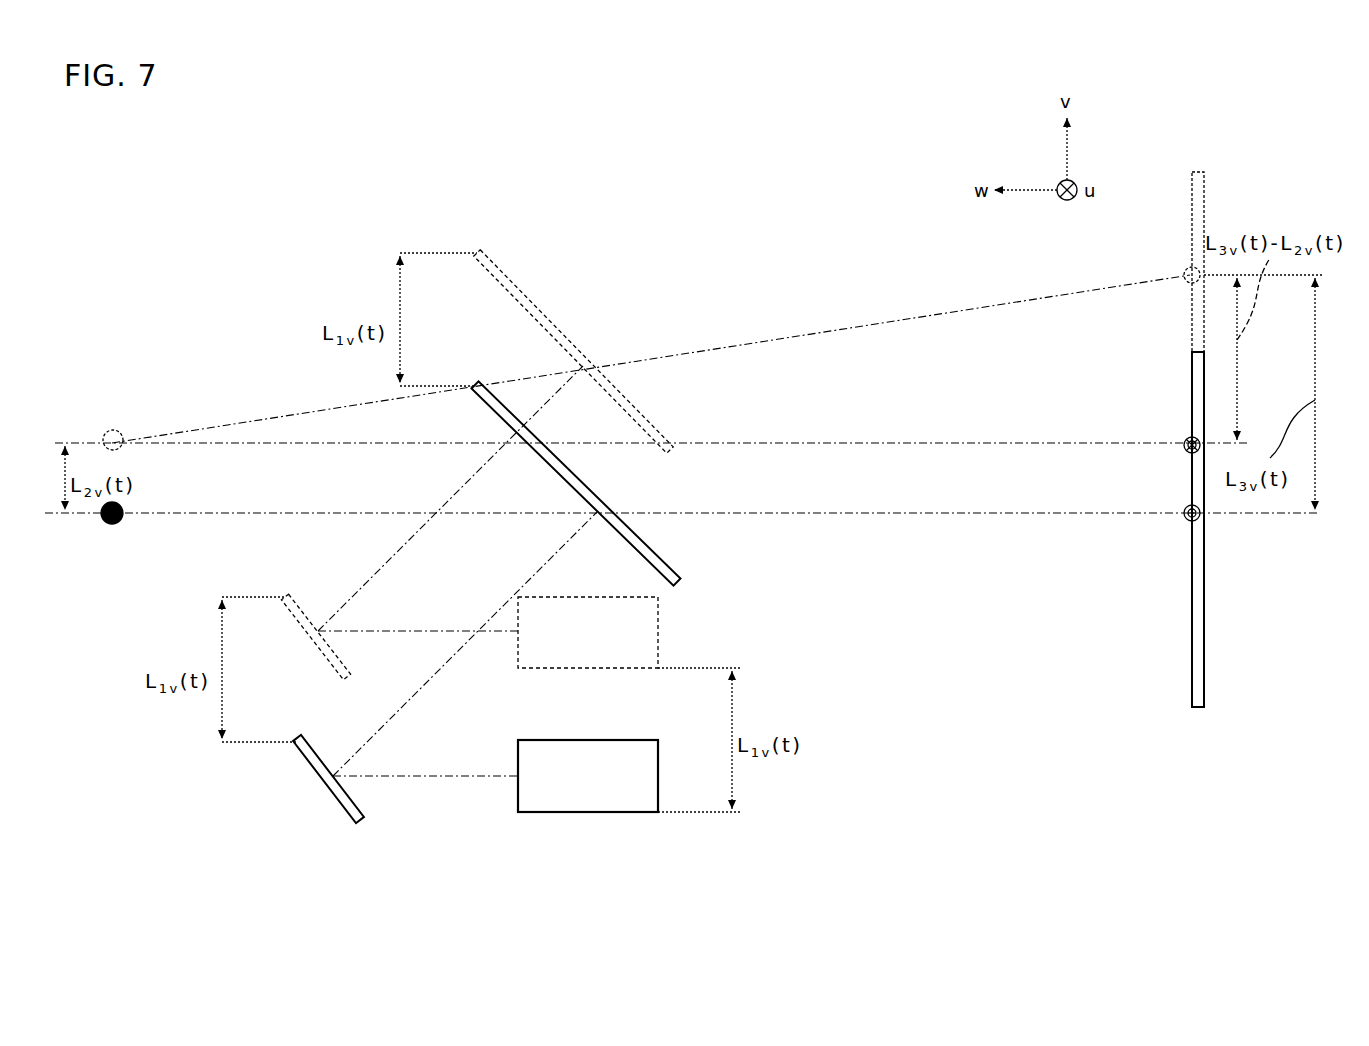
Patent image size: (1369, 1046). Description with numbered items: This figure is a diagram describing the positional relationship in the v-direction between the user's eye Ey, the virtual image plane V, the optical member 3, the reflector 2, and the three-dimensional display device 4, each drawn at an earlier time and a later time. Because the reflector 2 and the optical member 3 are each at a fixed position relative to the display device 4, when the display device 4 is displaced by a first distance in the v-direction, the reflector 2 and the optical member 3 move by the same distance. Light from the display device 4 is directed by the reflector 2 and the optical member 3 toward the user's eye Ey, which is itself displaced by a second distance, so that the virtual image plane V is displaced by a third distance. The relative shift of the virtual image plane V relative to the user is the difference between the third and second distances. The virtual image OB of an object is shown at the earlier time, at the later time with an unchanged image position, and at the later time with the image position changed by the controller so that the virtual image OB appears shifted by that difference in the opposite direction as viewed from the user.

The reflector 2 is at (300, 598).
The optical member 3 is at (640, 408).
The 3D display device 4 is at (588, 668).
The user's eye Ey is at (113, 430).
The virtual image of an object OB is at (1183, 280).
The virtual image plane V is at (1204, 200).